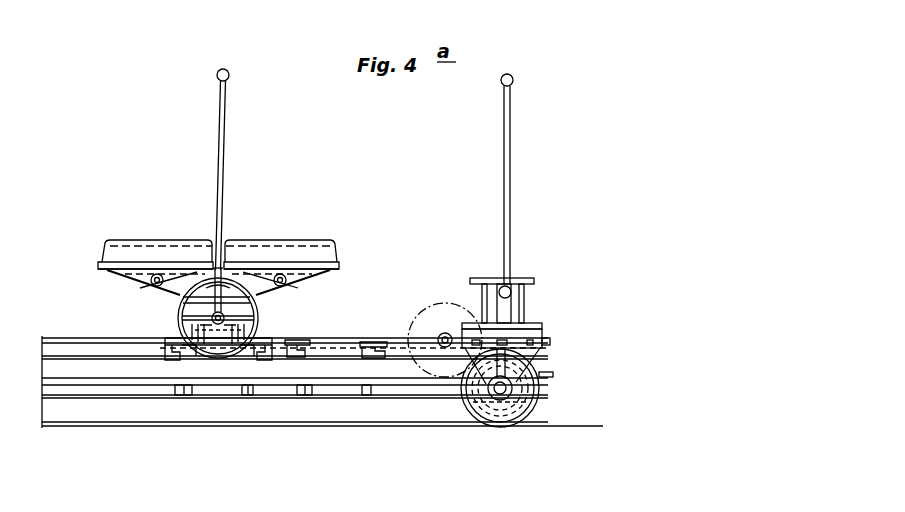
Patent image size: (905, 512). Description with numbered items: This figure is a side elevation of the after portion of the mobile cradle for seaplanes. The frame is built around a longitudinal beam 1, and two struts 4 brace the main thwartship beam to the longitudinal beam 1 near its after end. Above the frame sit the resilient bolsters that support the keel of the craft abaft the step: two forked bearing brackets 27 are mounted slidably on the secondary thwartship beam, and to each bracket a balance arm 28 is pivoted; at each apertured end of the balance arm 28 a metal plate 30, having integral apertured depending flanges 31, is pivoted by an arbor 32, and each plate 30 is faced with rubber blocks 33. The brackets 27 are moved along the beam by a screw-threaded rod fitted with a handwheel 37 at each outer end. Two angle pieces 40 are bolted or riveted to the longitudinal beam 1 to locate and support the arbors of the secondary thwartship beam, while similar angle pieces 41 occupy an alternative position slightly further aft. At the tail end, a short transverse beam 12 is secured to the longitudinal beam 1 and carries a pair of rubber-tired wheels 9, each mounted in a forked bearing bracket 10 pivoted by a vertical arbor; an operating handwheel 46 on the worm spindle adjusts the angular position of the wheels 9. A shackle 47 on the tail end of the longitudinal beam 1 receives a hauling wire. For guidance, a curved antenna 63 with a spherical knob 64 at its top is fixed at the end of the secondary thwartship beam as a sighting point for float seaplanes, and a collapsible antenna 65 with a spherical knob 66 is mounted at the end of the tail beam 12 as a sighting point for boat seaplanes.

The longitudinal beam 1 is at (70, 350).
The struts 4 is at (74, 373).
The rubber-tired wheels 9 is at (522, 413).
The forked bearing bracket 10 is at (540, 348).
The short transverse beam 12 is at (522, 303).
The forked bearing brackets 27 is at (180, 300).
The balance arm 28 is at (253, 287).
The metal plate 30 is at (105, 266).
The apertured depending flanges 31 is at (133, 278).
The arbor 32 is at (150, 281).
The rubber blocks 33 is at (167, 255).
The handwheel 37 is at (203, 350).
The angle pieces 40 is at (178, 347).
The angle pieces 41 is at (303, 340).
The operating handwheel 46 is at (420, 368).
The shackle 47 is at (553, 377).
The curved antennae 63 is at (225, 120).
The spherical knob 64 is at (230, 70).
The antennae 65 is at (508, 127).
The spherical knob 66 is at (512, 75).